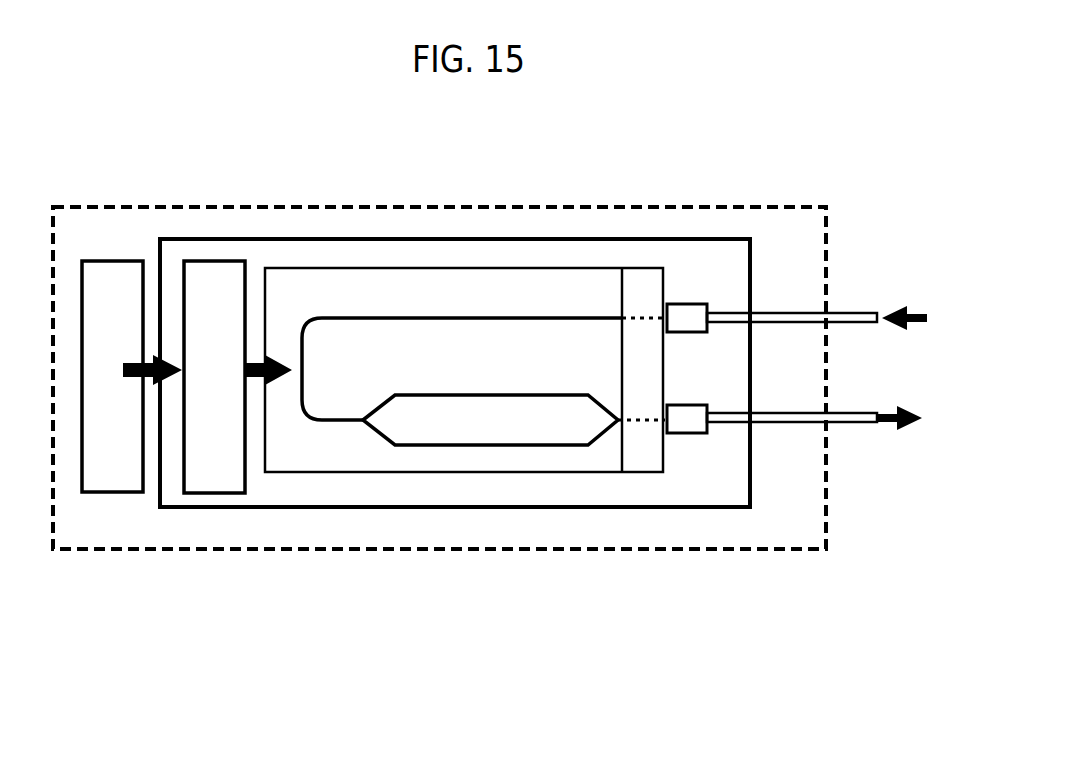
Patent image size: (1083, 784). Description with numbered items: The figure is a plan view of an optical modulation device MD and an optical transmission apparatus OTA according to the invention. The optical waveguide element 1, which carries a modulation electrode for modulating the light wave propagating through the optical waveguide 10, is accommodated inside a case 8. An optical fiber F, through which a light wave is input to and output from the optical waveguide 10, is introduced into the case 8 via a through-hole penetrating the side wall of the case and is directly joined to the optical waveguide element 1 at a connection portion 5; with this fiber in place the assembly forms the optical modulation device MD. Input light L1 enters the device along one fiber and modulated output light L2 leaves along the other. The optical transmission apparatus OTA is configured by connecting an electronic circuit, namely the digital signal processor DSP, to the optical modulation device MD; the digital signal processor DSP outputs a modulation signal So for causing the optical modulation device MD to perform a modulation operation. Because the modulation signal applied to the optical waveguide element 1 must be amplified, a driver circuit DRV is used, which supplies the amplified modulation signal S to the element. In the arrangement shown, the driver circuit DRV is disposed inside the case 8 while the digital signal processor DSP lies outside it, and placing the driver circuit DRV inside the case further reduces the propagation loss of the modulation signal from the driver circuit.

The optical transmission apparatus OTA is at (215, 550).
The optical modulation device MD is at (421, 508).
The digital signal processor DSP is at (108, 262).
The driver circuit DRV is at (211, 262).
The case 8 is at (512, 240).
The optical waveguide device 1 is at (417, 280).
The optical waveguide 10 is at (527, 446).
The optical component block 5 is at (648, 462).
The optical fiber F is at (803, 313).
The input light L1 is at (905, 299).
The output light L2 is at (902, 436).
The input signal So is at (143, 357).
The drive signal S is at (269, 358).